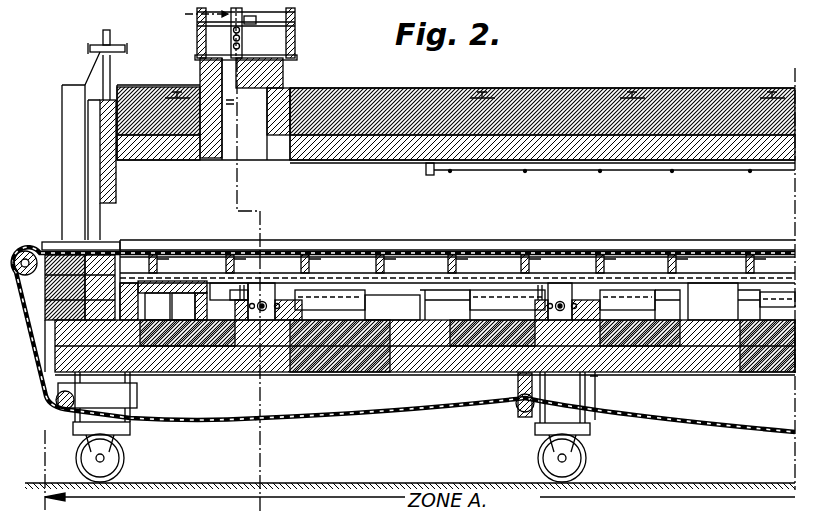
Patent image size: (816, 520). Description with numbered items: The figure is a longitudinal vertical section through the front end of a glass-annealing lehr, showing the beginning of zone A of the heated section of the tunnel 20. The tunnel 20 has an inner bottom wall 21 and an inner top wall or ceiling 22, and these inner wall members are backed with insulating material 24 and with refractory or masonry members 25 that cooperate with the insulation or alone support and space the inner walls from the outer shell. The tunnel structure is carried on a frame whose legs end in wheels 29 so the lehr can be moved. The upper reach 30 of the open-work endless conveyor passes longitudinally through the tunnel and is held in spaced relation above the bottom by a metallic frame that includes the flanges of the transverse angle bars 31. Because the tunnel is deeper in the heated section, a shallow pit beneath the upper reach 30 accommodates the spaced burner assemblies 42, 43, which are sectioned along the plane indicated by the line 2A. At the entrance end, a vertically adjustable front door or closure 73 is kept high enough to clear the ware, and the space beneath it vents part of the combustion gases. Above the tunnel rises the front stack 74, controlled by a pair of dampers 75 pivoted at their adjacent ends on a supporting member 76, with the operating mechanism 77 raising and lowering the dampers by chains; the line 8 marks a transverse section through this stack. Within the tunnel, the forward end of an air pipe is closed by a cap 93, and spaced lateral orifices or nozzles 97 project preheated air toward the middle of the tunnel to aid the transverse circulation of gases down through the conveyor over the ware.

The section line 8- 8 is at (258, 512).
The tunnel 20 is at (500, 84).
The inner bottom wall 21 is at (356, 372).
The inner top wall or ceiling 22 is at (345, 155).
The insulating material 24 is at (665, 92).
The refractory or masonry members 25 is at (696, 372).
The wheels 29 is at (586, 450).
The upper reach of endless conveyor 30 is at (562, 250).
The transverse angle bars 31 is at (688, 252).
The burner assembly 42 is at (272, 372).
The burner assembly 43 is at (487, 371).
The front door or closure 73 is at (116, 185).
The front stack 74 is at (268, 100).
The dampers 75 is at (213, 55).
The supporting member 76 is at (262, 52).
The operating mechanism 77 is at (292, 14).
The cap 93 is at (425, 174).
The lateral orifices or nozzles 97 is at (598, 173).
The section line 2A- 2A is at (12, 252).